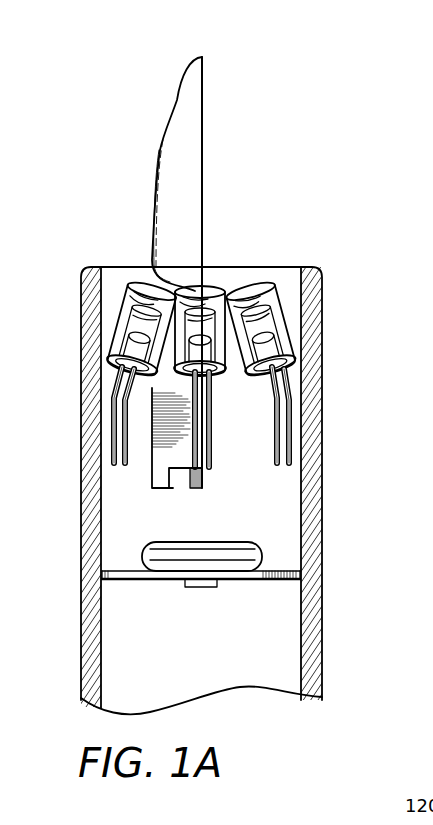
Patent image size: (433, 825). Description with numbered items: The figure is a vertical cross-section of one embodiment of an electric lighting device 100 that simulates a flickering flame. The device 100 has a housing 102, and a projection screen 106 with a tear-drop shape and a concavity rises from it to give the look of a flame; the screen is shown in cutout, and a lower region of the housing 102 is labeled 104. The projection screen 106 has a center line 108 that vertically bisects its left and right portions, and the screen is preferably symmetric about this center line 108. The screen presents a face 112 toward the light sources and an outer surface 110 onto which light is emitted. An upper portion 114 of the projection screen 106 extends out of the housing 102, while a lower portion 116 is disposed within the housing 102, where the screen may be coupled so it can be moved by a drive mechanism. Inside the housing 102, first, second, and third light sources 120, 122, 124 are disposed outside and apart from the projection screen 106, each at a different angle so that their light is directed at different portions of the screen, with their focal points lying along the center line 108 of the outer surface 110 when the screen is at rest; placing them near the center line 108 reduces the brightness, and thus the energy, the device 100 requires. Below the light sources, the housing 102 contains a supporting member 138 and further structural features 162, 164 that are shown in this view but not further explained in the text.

The electric lighting device 100 is at (327, 180).
The housing 102 is at (326, 260).
The lower housing portion 104 is at (240, 677).
The projection screen 106 is at (173, 249).
The center line 108 is at (204, 150).
The outer surface 110 is at (177, 98).
The face 112 is at (162, 138).
The upper portion 114 is at (143, 187).
The lower portion 116 is at (140, 488).
The first light source 120 is at (135, 347).
The second light source 122 is at (200, 350).
The third light source 124 is at (268, 347).
The support plate 138 is at (280, 582).
The notch 162 is at (185, 478).
The pad 164 is at (262, 558).